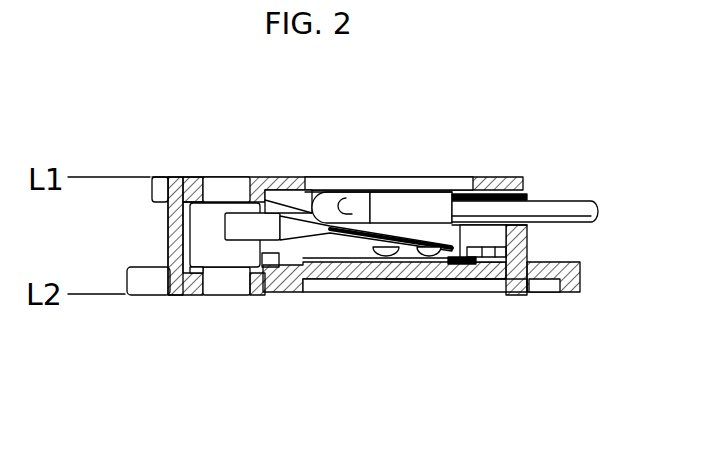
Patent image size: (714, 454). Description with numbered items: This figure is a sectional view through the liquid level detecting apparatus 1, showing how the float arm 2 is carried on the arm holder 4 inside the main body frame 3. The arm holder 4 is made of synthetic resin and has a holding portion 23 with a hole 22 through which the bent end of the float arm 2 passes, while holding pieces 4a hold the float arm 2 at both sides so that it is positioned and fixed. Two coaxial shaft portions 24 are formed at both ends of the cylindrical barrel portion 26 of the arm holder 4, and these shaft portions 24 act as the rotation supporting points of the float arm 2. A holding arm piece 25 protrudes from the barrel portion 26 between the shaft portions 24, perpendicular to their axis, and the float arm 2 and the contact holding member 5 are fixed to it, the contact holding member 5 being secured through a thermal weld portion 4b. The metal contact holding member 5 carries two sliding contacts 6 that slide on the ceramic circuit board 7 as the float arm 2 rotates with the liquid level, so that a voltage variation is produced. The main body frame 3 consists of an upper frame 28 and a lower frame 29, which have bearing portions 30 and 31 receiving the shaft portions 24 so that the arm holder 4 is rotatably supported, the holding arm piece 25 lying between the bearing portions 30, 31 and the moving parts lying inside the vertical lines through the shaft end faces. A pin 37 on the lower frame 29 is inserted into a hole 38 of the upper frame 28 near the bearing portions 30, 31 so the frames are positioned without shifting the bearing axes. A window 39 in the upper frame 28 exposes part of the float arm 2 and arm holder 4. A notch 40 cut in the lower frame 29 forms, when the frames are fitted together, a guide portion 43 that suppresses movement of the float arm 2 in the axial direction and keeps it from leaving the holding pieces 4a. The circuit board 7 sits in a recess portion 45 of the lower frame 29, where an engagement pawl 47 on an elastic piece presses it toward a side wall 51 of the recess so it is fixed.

The liquid level detecting apparatus 1 is at (281, 178).
The float arm 2 is at (572, 201).
The main body frame 3 is at (543, 298).
The arm holder 4 is at (293, 177).
The holding pieces 4a is at (411, 205).
The thermal weld portion 4b is at (262, 268).
The contact holding member 5 is at (353, 262).
The sliding contact 6 is at (395, 262).
The circuit board 7 is at (445, 266).
The hole 22 is at (343, 177).
The holding portion 23 is at (357, 177).
The shaft portions 24 is at (222, 188).
The holding arm piece 25 is at (295, 275).
The barrel portion 26 is at (210, 255).
The upper frame 28 is at (163, 177).
The lower frame 29 is at (278, 280).
The bearing portion 30 is at (195, 179).
The bearing portion 31 is at (198, 283).
The pin 37 is at (177, 223).
The hole 38 is at (155, 177).
The window 39 is at (468, 190).
The notch 40 is at (507, 228).
The guide portion 43 is at (527, 192).
The recess portion 45 is at (383, 256).
The engagement pawl 47 is at (491, 194).
The side wall 51 is at (327, 286).